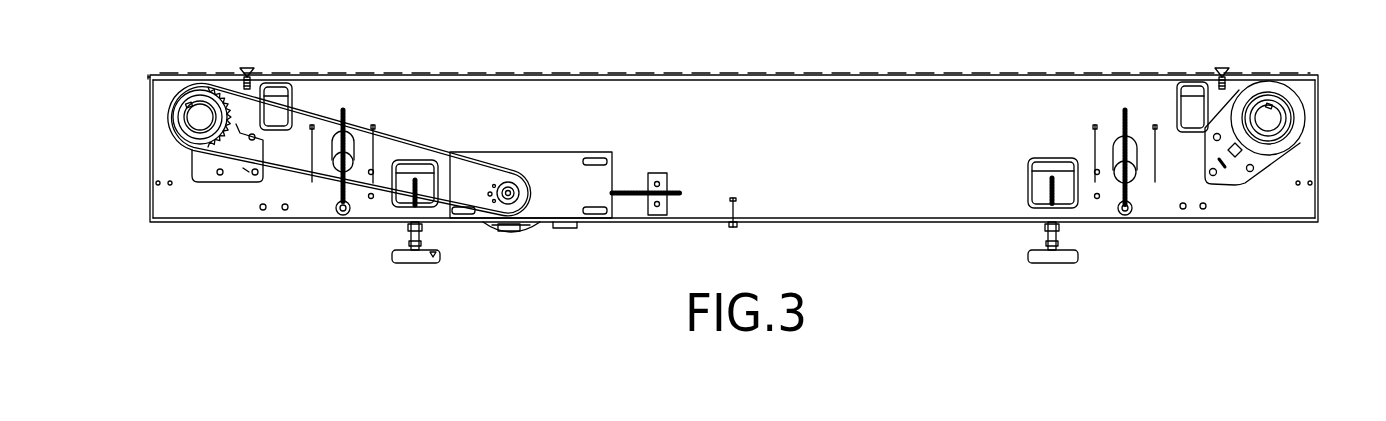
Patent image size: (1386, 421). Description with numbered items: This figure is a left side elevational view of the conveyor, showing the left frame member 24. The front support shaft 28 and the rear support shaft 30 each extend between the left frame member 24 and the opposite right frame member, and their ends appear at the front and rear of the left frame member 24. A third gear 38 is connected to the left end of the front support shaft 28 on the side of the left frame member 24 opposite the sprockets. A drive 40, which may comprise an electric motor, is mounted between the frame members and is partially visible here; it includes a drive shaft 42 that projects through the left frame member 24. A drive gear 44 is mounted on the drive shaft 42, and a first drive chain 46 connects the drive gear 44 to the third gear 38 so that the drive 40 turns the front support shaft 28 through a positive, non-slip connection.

The left frame member 24 is at (889, 108).
The front support shaft 28 is at (200, 120).
The rear support shaft 30 is at (1270, 120).
The third gear 38 is at (229, 140).
The drive 40 is at (520, 232).
The drive shaft 42 is at (522, 187).
The drive gear 44 is at (490, 183).
The first drive chain 46 is at (400, 142).